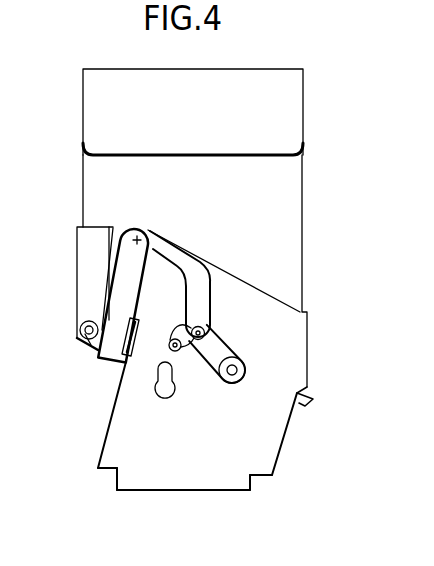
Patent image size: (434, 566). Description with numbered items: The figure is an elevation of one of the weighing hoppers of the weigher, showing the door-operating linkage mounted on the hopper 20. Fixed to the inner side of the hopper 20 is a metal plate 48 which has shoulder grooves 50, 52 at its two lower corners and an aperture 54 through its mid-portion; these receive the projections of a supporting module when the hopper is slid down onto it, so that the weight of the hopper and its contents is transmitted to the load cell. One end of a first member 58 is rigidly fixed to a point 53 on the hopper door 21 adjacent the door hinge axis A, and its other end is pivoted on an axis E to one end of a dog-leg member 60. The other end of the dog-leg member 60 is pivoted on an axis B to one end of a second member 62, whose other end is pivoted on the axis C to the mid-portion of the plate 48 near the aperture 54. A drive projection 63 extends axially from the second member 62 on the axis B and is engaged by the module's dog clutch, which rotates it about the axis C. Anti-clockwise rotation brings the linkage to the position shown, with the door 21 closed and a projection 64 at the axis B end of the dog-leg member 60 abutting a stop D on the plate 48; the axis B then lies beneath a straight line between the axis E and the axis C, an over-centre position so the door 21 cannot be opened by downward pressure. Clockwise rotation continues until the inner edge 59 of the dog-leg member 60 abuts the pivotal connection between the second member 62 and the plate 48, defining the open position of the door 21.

The hopper 20 is at (95, 98).
The hopper door 21 is at (314, 400).
The metal plate 48 is at (120, 443).
The shoulder groove 50 is at (110, 483).
The shoulder groove 52 is at (263, 488).
The point 53 is at (117, 363).
The aperture 54 is at (165, 398).
The first member 58 is at (122, 289).
The inner edge 59 is at (192, 287).
The dog-leg member 60 is at (127, 268).
The second member 62 is at (163, 353).
The drive projection 63 is at (198, 354).
The projection 64 is at (200, 310).
The door hinge axis A is at (80, 332).
The axis B is at (205, 334).
The axis C is at (245, 370).
The stop D is at (172, 341).
The axis E is at (138, 238).